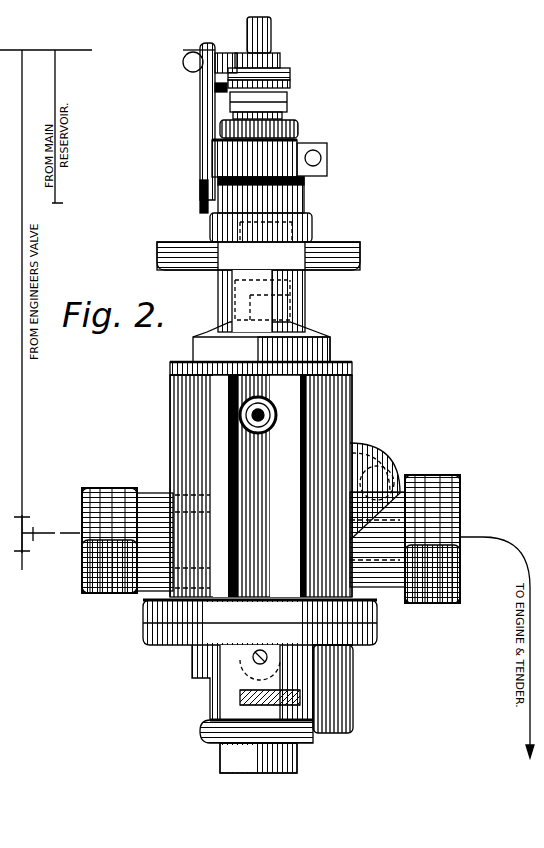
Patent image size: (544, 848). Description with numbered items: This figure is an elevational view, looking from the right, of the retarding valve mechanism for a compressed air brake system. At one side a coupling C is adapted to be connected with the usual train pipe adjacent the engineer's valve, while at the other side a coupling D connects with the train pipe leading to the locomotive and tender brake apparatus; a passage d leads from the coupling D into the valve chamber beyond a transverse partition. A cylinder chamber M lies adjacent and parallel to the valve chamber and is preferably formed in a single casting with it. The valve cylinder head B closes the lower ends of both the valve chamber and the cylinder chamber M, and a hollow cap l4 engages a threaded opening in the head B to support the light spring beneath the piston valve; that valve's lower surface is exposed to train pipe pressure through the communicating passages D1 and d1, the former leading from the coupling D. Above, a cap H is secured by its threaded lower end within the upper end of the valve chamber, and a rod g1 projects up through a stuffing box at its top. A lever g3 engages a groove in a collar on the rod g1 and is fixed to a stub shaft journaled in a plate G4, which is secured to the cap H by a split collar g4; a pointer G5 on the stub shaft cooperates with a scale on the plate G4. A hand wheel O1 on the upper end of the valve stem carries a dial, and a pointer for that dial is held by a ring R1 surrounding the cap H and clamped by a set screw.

The lever g3 is at (217, 82).
The rod g1 is at (277, 88).
The split collar g4 is at (290, 152).
The pointer G5 is at (200, 128).
The plate G4 is at (200, 195).
The hand wheel O1 is at (173, 248).
The ring R1 is at (317, 223).
The cap H is at (290, 288).
The cylinder chamber M is at (203, 458).
The passage d is at (392, 470).
The passage d1 is at (375, 590).
The coupling D is at (452, 503).
The coupling C is at (86, 595).
The valve cylinder head B is at (210, 632).
The passage D1 is at (353, 697).
The hollow cap l4 is at (237, 760).